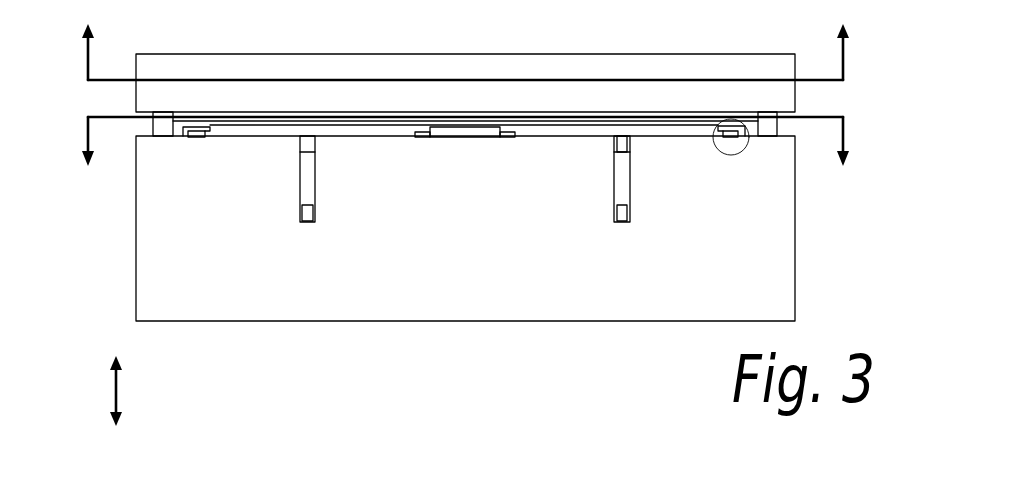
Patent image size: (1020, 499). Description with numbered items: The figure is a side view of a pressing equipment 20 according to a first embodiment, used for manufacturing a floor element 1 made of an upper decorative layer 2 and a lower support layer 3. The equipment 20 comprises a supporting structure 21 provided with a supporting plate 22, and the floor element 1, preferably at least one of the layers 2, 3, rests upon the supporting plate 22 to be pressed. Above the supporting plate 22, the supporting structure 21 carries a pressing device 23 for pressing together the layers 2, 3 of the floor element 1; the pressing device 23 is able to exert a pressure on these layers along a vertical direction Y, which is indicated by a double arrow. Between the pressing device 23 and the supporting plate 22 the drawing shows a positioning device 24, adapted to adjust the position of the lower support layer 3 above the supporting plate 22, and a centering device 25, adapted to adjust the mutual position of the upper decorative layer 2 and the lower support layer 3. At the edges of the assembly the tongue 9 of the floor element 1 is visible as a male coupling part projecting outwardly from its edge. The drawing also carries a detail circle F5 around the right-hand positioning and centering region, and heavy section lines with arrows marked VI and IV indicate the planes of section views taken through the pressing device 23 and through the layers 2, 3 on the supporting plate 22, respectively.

The floor panel 1 is at (658, 148).
The upper decorative layer 2 is at (538, 128).
The lower support layer 3 is at (535, 137).
The tongue 9 is at (310, 144).
The pressing equipment 20 is at (572, 340).
The supporting structure 21 is at (162, 128).
The supporting plate 22 is at (795, 128).
The pressing device 23 is at (205, 67).
The positioning device 24 is at (210, 140).
The centering device 25 is at (190, 137).
The detail region F5 is at (718, 151).
The vertical direction Y is at (117, 388).
The section line VI is at (464, 52).
The section line IV is at (465, 141).